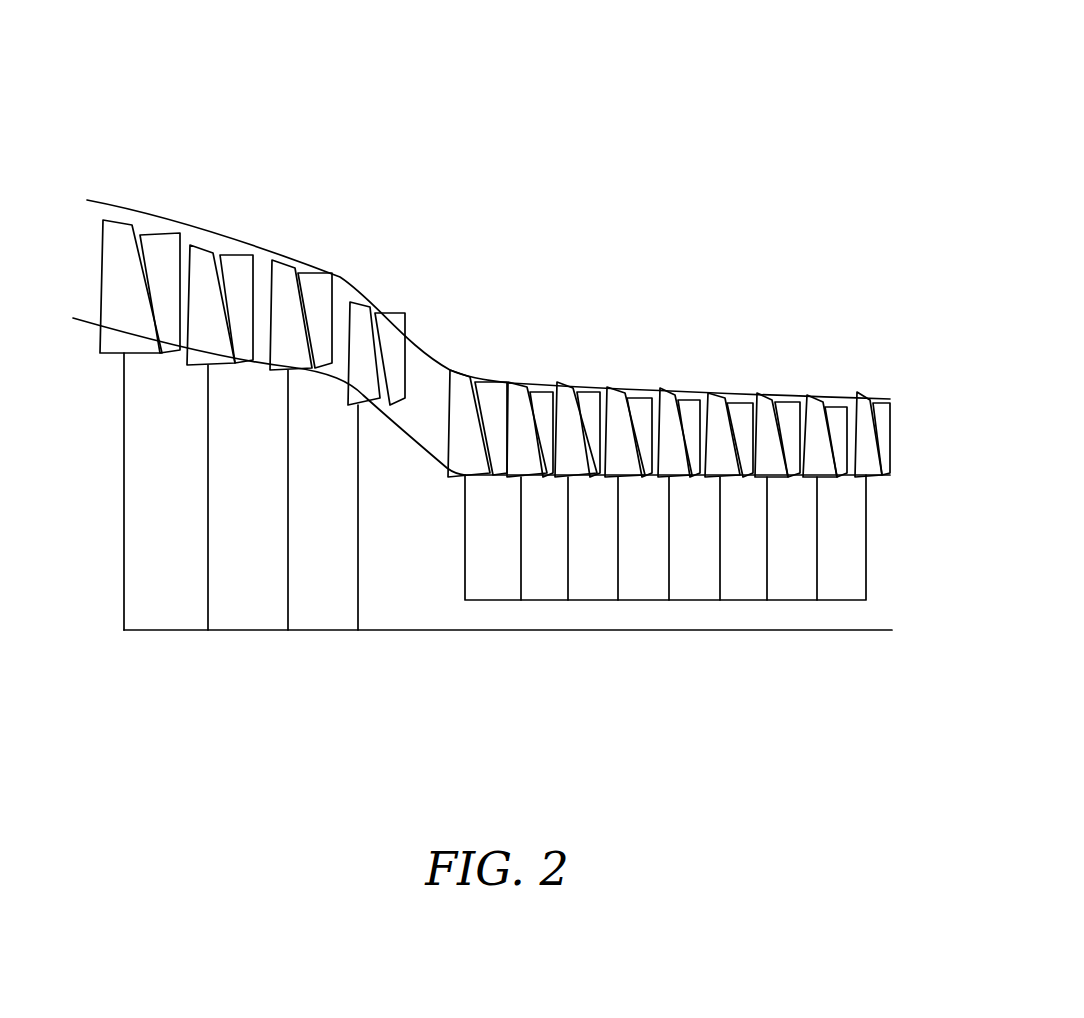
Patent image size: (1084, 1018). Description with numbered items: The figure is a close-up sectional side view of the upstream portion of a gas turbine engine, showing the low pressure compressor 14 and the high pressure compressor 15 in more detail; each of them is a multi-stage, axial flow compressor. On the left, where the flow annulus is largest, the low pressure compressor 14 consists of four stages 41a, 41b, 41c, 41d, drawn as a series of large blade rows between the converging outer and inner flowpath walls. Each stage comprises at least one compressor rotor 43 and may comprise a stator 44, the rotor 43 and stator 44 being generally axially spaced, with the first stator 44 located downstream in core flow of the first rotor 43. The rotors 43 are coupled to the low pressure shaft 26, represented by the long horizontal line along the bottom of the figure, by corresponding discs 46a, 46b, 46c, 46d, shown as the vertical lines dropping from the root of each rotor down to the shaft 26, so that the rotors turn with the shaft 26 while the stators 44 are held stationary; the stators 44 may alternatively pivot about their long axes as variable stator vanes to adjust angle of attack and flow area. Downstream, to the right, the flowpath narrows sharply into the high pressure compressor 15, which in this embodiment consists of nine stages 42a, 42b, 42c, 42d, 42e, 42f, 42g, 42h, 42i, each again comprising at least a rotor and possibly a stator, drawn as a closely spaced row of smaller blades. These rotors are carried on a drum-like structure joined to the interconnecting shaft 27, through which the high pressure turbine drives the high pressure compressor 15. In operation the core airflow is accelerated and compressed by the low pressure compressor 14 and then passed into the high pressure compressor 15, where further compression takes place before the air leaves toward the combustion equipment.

The low pressure compressor 14 is at (265, 127).
The high pressure compressor 15 is at (757, 235).
The low pressure shaft 26 is at (510, 632).
The interconnecting shaft 27 is at (698, 602).
The first low pressure compressor stage 41a is at (125, 213).
The second low pressure compressor stage 41b is at (202, 238).
The third low pressure compressor stage 41c is at (298, 252).
The fourth low pressure compressor stage 41d is at (392, 290).
The first high pressure compressor stage 42a is at (475, 360).
The second high pressure compressor stage 42b is at (537, 360).
The third high pressure compressor stage 42c is at (583, 367).
The fourth high pressure compressor stage 42d is at (623, 377).
The fifth high pressure compressor stage 42e is at (680, 378).
The sixth high pressure compressor stage 42f is at (732, 380).
The seventh high pressure compressor stage 42g is at (780, 380).
The eighth high pressure compressor stage 42h is at (825, 383).
The ninth high pressure compressor stage 42i is at (880, 387).
The compressor rotor 43 is at (112, 365).
The stator 44 is at (163, 350).
The first disc 46a is at (123, 553).
The second disc 46b is at (208, 593).
The third disc 46c is at (288, 588).
The fourth disc 46d is at (360, 562).